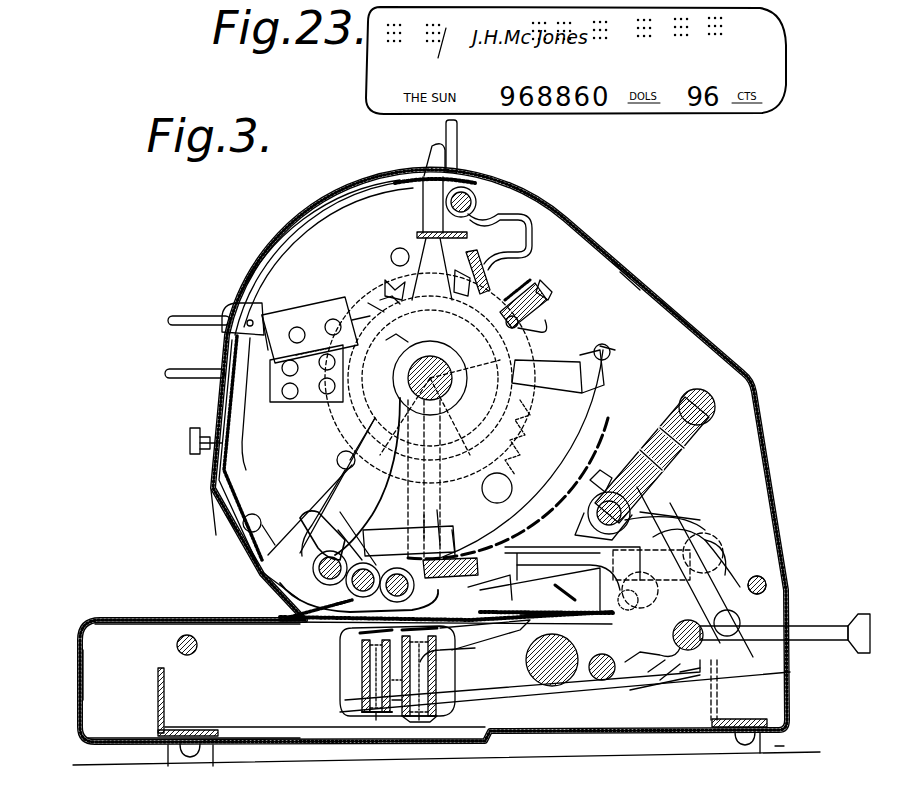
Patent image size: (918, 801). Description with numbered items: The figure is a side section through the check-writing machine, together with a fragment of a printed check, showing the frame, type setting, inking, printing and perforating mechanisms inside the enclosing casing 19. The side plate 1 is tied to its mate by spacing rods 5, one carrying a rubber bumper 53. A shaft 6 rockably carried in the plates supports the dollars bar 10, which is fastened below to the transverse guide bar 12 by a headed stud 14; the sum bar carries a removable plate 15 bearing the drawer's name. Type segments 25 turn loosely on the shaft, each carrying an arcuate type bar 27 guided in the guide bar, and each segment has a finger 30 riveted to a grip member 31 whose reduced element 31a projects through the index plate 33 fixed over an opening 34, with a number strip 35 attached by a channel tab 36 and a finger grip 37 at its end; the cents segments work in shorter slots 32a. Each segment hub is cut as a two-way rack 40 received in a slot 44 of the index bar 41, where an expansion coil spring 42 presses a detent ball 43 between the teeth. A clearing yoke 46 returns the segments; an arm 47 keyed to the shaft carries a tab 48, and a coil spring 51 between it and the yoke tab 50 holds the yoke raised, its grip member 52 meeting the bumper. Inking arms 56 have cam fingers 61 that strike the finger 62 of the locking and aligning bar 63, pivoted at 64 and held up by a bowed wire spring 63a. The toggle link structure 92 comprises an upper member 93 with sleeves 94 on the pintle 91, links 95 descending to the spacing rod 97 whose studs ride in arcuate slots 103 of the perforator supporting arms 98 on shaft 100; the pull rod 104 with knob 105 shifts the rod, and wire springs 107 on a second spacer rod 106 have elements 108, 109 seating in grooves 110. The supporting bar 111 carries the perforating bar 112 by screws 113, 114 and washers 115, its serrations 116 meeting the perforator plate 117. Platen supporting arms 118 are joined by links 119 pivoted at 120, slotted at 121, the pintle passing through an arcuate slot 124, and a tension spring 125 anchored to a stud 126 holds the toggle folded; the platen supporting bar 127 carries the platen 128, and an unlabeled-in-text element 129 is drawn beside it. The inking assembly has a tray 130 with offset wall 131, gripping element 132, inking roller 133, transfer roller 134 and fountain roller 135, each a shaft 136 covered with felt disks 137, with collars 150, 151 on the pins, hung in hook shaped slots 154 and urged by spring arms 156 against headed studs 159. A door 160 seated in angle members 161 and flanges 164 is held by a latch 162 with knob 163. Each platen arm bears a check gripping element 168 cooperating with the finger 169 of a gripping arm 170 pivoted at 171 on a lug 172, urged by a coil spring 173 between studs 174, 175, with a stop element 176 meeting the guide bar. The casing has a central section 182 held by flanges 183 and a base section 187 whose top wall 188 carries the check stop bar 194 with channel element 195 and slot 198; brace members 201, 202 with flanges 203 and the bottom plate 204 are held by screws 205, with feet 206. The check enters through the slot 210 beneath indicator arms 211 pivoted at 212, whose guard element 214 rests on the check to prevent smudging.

The side plate 1 is at (682, 334).
The spacing rod 5 is at (175, 644).
The shaft 6 is at (445, 372).
The dollars bar 10 is at (625, 363).
The guide bar 12 is at (476, 541).
The headed stud 14 is at (302, 361).
The plate 15 is at (438, 510).
The enclosing casing 19 is at (770, 441).
The type segment 25 is at (355, 320).
The arcuate type bar 27 is at (610, 347).
The finger 30 is at (288, 326).
The grip member 31 is at (272, 386).
The element of grip member 31a is at (268, 320).
The shorter slot 32a is at (364, 197).
The index plate 33 is at (306, 223).
The opening 34 is at (406, 180).
The number strip 35 is at (284, 243).
The tab 36 is at (240, 306).
The finger grip 37 is at (176, 368).
The two-way rack 40 is at (515, 292).
The index bar 41 is at (520, 319).
The expansion coil spring 42 is at (541, 279).
The detent ball 43 is at (532, 362).
The slot 44 is at (528, 290).
The clearing yoke 46 is at (422, 229).
The arm 47 is at (470, 456).
The tab 48 is at (385, 441).
The tab 50 is at (386, 298).
The expansion coil spring 51 is at (388, 340).
The grip member 52 is at (442, 155).
The rubber bumper 53 is at (466, 188).
The inking arm 56 is at (366, 430).
The cam finger 61 is at (372, 308).
The finger 62 is at (384, 285).
The locking and aligning bar 63 is at (478, 262).
The bowed wire spring 63a is at (503, 230).
The pivot 64 is at (460, 280).
The pintle 91 is at (603, 474).
The toggle link structure 92 is at (688, 437).
The upper member 93 is at (682, 398).
The sleeve 94 is at (630, 512).
The link 95 is at (660, 524).
The spacing rod 97 is at (688, 674).
The perforator supporting arm 98 is at (500, 714).
The shaft 100 is at (534, 668).
The arcuate slot 103 is at (665, 682).
The pull rod 104 is at (815, 625).
The knob 105 is at (853, 612).
The second spacer rod 106 is at (597, 680).
The wire spring 107 is at (648, 692).
The spring element 108 is at (749, 580).
The spring element 109 is at (660, 662).
The groove 110 is at (712, 652).
The supporting bar 111 is at (440, 702).
The perforating bar 112 is at (442, 672).
The screw 113 is at (360, 687).
The screw 114 is at (440, 688).
The washer 115 is at (418, 722).
The serrations 116 is at (400, 668).
The perforator plate 117 is at (453, 531).
The platen supporting arm 118 is at (400, 718).
The link 119 is at (692, 535).
The pivot 120 is at (732, 616).
The slot 121 is at (642, 513).
The arcuate slot 124 is at (716, 540).
The tension spring 125 is at (526, 426).
The stud 126 is at (392, 253).
The platen supporting bar 127 is at (360, 710).
The platen 128 is at (400, 640).
The plate 129 is at (358, 636).
The tray 130 is at (300, 573).
The offset wall 131 is at (252, 520).
The gripping element 132 is at (300, 519).
The inking roller 133 is at (380, 556).
The transfer roller 134 is at (322, 619).
The fountain roller 135 is at (312, 598).
The shaft 136 is at (437, 513).
The felt disk 137 is at (412, 596).
The collar 150 is at (343, 513).
The metal collar 151 is at (338, 530).
The hook shaped slot 154 is at (310, 498).
The spring arm 156 is at (338, 470).
The headed stud 159 is at (340, 452).
The door 160 is at (200, 460).
The angle member 161 is at (238, 557).
The latch 162 is at (236, 422).
The knob 163 is at (194, 432).
The flange 164 is at (223, 488).
The check gripping element 168 is at (500, 646).
The finger 169 is at (494, 596).
The gripping arm 170 is at (545, 547).
The pivot 171 is at (560, 576).
The lug 172 is at (614, 618).
The expansion coil spring 173 is at (724, 558).
The stud 174 is at (625, 585).
The stud 175 is at (650, 655).
The stop element 176 is at (505, 482).
The central section 182 is at (630, 280).
The flange 183 is at (619, 269).
The base section 187 is at (79, 657).
The top wall 188 is at (142, 618).
The bar 194 is at (562, 611).
The channel element 195 is at (515, 631).
The slot 198 is at (566, 596).
The brace member 201 is at (157, 676).
The brace member 202 is at (735, 721).
The flange 203 is at (718, 702).
The bottom plate 204 is at (110, 740).
The screw 205 is at (198, 758).
The foot 206 is at (170, 756).
The slot 210 is at (472, 586).
The arm 211 is at (262, 574).
The pivot 212 is at (212, 531).
The guard element 214 is at (290, 619).